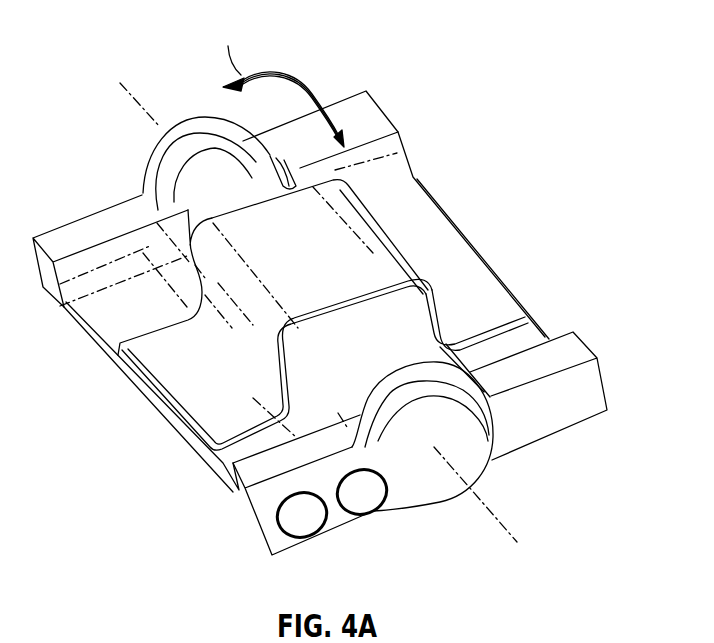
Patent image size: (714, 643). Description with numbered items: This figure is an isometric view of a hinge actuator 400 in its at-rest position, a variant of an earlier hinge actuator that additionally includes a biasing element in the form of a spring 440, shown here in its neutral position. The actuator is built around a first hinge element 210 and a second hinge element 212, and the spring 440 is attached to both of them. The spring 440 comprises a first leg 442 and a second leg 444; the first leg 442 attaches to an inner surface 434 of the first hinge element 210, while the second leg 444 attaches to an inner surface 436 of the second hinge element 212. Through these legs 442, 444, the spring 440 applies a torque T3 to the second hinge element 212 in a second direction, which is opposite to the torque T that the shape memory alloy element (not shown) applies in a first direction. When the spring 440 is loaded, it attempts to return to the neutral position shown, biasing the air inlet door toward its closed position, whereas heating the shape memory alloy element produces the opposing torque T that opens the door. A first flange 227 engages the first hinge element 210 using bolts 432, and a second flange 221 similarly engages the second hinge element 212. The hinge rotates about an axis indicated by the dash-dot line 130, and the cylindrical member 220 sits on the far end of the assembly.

The hinge actuator 400 is at (579, 93).
The axis 130 is at (146, 113).
The first hinge element 210 is at (289, 328).
The second hinge element 212 is at (408, 198).
The first cylindrical member 220 is at (193, 116).
The second flange 221 is at (347, 104).
The first flange 227 is at (263, 541).
The bolts 432 is at (300, 520).
The inner surface 434 is at (220, 466).
The inner surface 436 is at (540, 333).
The spring 440 is at (406, 258).
The first leg 442 is at (187, 392).
The second leg 444 is at (487, 308).
The torque T is at (282, 84).
The torque T3 is at (288, 78).